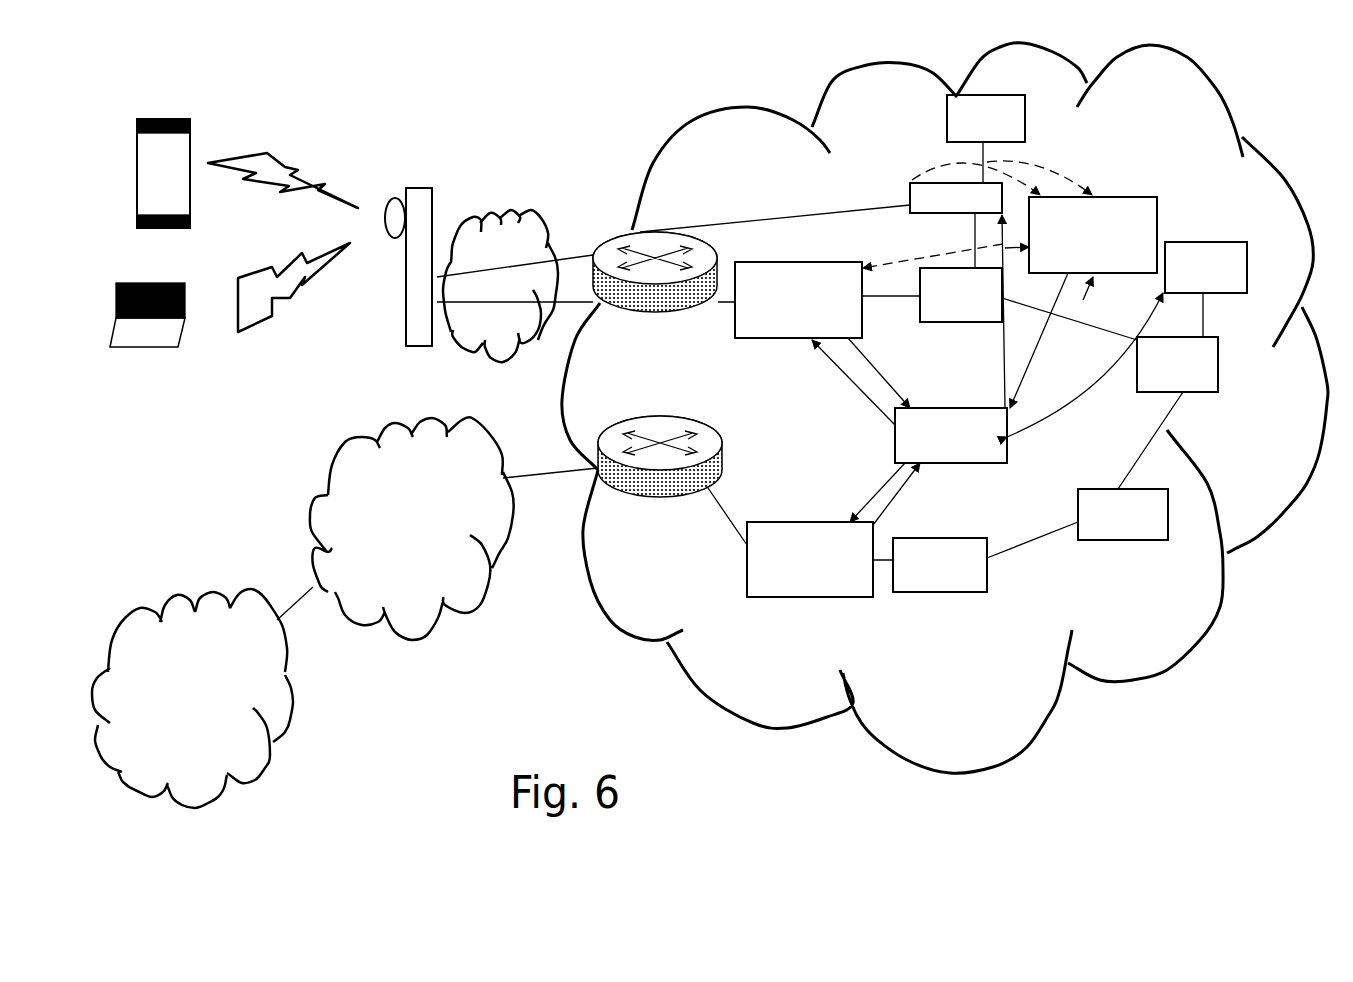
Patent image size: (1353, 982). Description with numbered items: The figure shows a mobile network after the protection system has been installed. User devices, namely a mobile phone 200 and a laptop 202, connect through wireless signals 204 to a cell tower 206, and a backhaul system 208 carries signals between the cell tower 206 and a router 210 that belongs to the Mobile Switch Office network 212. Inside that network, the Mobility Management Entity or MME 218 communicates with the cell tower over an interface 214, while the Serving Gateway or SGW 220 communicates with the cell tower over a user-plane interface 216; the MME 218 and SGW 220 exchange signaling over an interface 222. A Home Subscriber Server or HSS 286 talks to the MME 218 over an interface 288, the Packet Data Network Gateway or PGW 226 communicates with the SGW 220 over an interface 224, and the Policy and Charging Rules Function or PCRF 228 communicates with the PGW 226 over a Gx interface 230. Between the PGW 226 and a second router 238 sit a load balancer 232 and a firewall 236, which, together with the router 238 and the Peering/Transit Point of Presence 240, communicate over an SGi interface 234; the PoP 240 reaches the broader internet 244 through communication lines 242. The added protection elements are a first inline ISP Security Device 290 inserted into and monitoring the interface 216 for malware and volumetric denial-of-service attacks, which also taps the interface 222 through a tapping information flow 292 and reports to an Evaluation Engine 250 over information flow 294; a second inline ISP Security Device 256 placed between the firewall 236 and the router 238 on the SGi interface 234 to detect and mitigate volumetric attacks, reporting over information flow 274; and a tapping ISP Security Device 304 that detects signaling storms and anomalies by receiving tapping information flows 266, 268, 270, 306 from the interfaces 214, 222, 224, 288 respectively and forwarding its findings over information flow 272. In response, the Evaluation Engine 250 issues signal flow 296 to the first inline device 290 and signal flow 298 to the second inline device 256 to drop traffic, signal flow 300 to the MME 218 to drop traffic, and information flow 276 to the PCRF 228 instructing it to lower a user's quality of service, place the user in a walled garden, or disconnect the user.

The mobile phone 200 is at (190, 130).
The laptop 202 is at (168, 350).
The wireless signals 204 is at (307, 177).
The cell tower 206 is at (420, 188).
The backhaul system 208 is at (510, 203).
The router 210 is at (627, 222).
The Mobile Switch Office network 212 is at (1053, 707).
The S1-MME interface 214 is at (743, 230).
The S1-U interface 216 is at (723, 307).
The Mobility Management Entity (MME) 218 is at (913, 180).
The Serving Gateway (SGW) 220 is at (987, 323).
The S11 interface 222 is at (975, 236).
The S5 interface 224 is at (1098, 335).
The Packet Data Network Gateway (PGW) 226 is at (1218, 382).
The Policy and Charging Rules Function (PCRF) 228 is at (1248, 257).
The Gx interface 230 is at (1203, 322).
The load balancer 232 is at (1140, 542).
The SGi interface 234 is at (530, 457).
The Firewall 236 is at (948, 593).
The router 238 is at (668, 415).
The Peering/Transit Point of Presence (PoP) 240 is at (350, 433).
The communication lines 242 is at (293, 600).
The internet 244 is at (187, 585).
The Evaluation Engine 250 is at (983, 463).
The second ISP Security Device (inline) 256 is at (802, 597).
The tapping information flow 266 is at (897, 190).
The tapping information flow 268 is at (1013, 252).
The tapping information flow 270 is at (1078, 312).
The information flow 272 is at (1037, 358).
The information flow 274 is at (907, 487).
The information flow 276 is at (1067, 408).
The Home Subscriber Server (HSS) 286 is at (1028, 122).
The S6a interface 288 is at (975, 152).
The first ISP Security Device (inline) 290 is at (767, 340).
The tapping information flow 292 is at (897, 262).
The information flow 294 is at (890, 380).
The signal flow 296 is at (858, 395).
The signal flow 298 is at (890, 487).
The signal flow 300 is at (1005, 375).
The ISP Security Device (tapping) 304 is at (1135, 195).
The tapping information flow 306 is at (1062, 173).